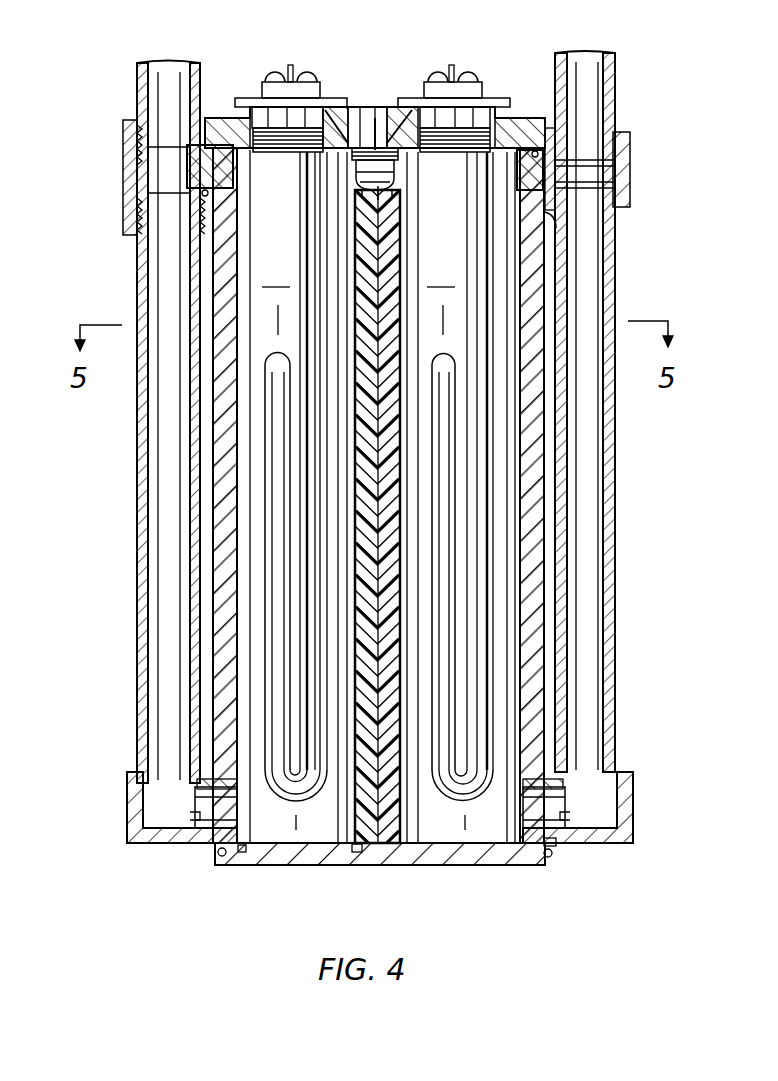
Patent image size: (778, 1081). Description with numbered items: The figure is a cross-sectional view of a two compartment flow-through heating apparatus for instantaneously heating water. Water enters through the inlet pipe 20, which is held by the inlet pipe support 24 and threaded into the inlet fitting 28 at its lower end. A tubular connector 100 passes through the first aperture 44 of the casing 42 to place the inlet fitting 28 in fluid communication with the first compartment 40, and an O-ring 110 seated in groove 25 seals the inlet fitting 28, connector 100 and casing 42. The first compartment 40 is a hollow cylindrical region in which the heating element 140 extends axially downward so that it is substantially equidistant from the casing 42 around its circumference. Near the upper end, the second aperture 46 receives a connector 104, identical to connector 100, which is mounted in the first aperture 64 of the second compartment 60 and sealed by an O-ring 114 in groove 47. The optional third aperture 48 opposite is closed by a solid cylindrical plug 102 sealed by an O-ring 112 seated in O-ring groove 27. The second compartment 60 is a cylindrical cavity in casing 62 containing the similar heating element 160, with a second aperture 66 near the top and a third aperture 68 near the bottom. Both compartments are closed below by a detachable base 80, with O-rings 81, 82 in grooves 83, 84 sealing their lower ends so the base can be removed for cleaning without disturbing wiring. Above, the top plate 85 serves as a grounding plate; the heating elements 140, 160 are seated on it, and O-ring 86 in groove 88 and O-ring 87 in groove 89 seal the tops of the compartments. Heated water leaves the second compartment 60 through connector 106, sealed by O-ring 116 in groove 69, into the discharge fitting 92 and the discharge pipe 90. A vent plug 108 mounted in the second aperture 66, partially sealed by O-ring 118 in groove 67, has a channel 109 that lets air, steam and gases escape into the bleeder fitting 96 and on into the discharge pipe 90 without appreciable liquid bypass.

The inlet pipe 20 is at (590, 548).
The inlet pipe support 24 is at (628, 150).
The groove 25 is at (552, 844).
The O-ring groove 27 is at (556, 222).
The inlet fitting 28 is at (632, 783).
The first compartment 40 is at (461, 497).
The casing 42 is at (530, 490).
The first aperture 44 is at (560, 817).
The second aperture 46 is at (355, 176).
The groove 47 is at (350, 212).
The third aperture 48 is at (603, 182).
The second compartment 60 is at (298, 496).
The casing 62 is at (220, 445).
The first aperture 64 is at (352, 174).
The second aperture 66 is at (195, 172).
The groove 67 is at (228, 195).
The third aperture 68 is at (190, 815).
The groove 69 is at (242, 853).
The base 80 is at (473, 850).
The O-ring 81 is at (388, 850).
The O-ring 82 is at (362, 855).
The groove 83 is at (547, 858).
The groove 84 is at (220, 857).
The top plate 85 is at (393, 118).
The O-ring 86 is at (498, 106).
The O-ring 87 is at (243, 116).
The groove 88 is at (410, 116).
The groove 89 is at (343, 113).
The discharge pipe 90 is at (160, 500).
The discharge fitting 92 is at (130, 780).
The bleeder fitting 96 is at (130, 143).
The connector 100 is at (560, 808).
The plug 102 is at (600, 167).
The connector 104 is at (356, 122).
The connector 106 is at (197, 806).
The vent plug 108 is at (185, 163).
The channel 109 is at (137, 158).
The O-ring 110 is at (567, 765).
The O-ring 112 is at (553, 126).
The O-ring 114 is at (379, 125).
The O-ring 116 is at (220, 781).
The O-ring 118 is at (208, 115).
The heating element 140 is at (454, 66).
The heating element 160 is at (276, 84).